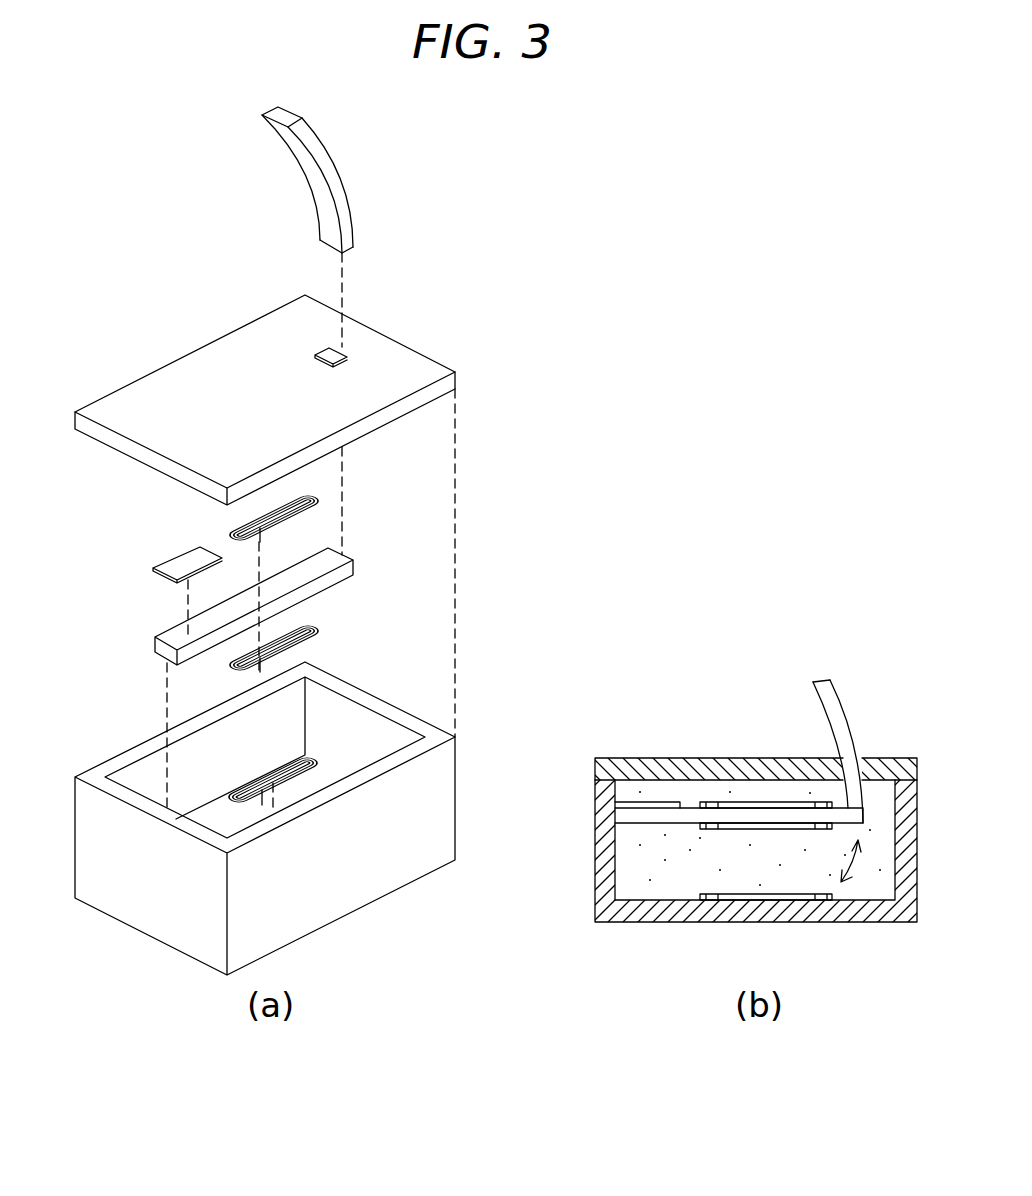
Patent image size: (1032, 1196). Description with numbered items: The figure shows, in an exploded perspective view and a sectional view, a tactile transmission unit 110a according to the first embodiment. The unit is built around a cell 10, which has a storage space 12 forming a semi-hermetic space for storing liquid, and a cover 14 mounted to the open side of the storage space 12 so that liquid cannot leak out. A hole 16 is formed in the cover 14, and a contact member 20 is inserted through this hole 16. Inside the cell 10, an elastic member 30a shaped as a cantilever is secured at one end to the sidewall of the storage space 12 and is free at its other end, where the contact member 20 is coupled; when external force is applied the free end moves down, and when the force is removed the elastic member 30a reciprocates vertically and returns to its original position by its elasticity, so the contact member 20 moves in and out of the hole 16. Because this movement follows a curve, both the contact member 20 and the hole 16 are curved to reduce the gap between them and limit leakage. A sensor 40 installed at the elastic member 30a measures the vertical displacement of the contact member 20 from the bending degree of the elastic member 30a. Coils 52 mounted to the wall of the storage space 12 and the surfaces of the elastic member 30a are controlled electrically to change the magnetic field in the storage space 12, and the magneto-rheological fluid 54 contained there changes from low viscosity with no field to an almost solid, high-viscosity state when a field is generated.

The tactile transmission unit 110a is at (181, 241).
The contact member 20 is at (342, 185).
The cover 14 is at (197, 387).
The hole 16 is at (332, 352).
The coils 52 is at (300, 758).
The sensor 40 is at (170, 567).
The elastic member 30a is at (177, 640).
The storage space 12 is at (333, 748).
The cell 10 is at (407, 832).
The magneto-rheological fluid 54 is at (870, 890).